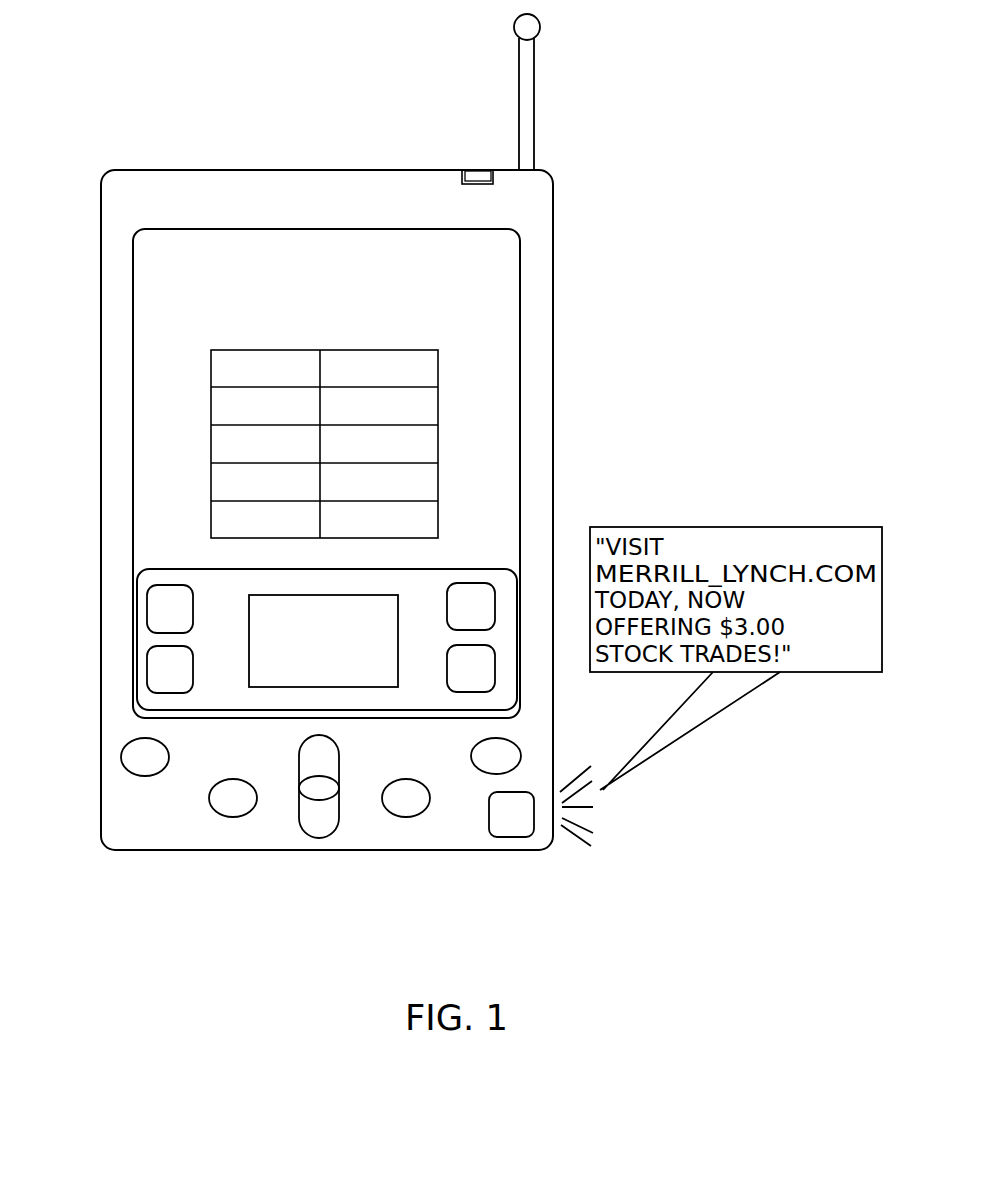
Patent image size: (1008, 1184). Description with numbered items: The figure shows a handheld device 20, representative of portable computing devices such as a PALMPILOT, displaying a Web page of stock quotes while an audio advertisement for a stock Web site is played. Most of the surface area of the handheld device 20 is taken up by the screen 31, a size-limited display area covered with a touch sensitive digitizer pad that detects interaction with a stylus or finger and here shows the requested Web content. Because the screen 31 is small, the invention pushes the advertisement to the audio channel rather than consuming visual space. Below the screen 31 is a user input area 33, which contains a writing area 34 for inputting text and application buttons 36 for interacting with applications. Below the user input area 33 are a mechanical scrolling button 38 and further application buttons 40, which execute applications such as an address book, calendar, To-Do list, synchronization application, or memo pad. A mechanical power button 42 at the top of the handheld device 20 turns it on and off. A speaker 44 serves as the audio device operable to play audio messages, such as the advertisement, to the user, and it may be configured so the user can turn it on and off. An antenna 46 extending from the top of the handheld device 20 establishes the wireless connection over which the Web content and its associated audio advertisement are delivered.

The handheld device 20 is at (553, 360).
The screen 31 is at (500, 268).
The user input area 33 is at (447, 577).
The writing area 34 is at (270, 605).
The application buttons 36 is at (163, 667).
The mechanical scrolling button 38 is at (320, 835).
The application buttons 40 is at (142, 770).
The mechanical power button 42 is at (480, 174).
The speaker 44 is at (513, 833).
The antenna 46 is at (530, 100).